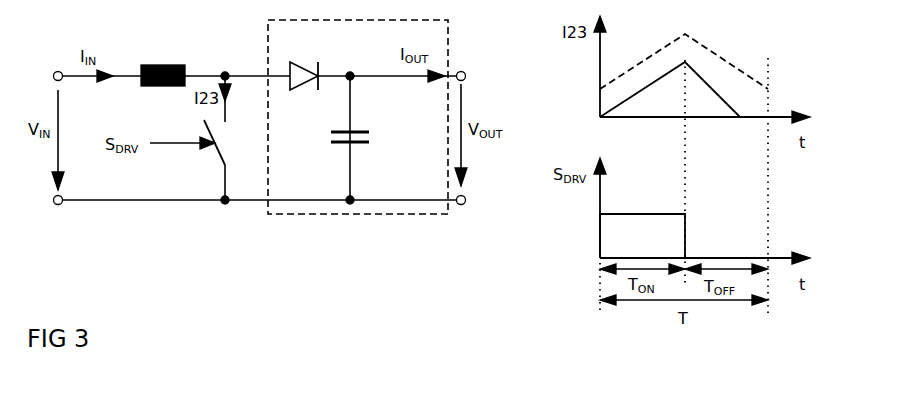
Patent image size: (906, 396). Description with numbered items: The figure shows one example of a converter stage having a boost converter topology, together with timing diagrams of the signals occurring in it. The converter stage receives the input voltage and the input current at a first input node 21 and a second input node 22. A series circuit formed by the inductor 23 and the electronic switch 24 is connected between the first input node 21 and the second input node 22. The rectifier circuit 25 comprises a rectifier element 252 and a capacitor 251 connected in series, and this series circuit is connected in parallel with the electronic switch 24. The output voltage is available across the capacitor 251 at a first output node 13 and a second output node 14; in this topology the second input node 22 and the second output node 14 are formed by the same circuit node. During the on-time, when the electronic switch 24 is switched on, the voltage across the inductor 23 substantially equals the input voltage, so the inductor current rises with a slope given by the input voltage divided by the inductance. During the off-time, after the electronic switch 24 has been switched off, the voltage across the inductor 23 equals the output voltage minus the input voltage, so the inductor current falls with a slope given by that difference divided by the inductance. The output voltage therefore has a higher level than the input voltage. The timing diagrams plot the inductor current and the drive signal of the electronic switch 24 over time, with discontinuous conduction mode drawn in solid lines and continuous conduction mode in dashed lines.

The first output node 13 is at (467, 72).
The second output node 14 is at (467, 205).
The first input node 21 is at (54, 72).
The second input node 22 is at (54, 204).
The inductor 23 is at (165, 62).
The electronic switch 24 is at (206, 158).
The rectifier circuit 25 is at (300, 215).
The capacitor 251 is at (376, 136).
The rectifier element 252 is at (298, 62).